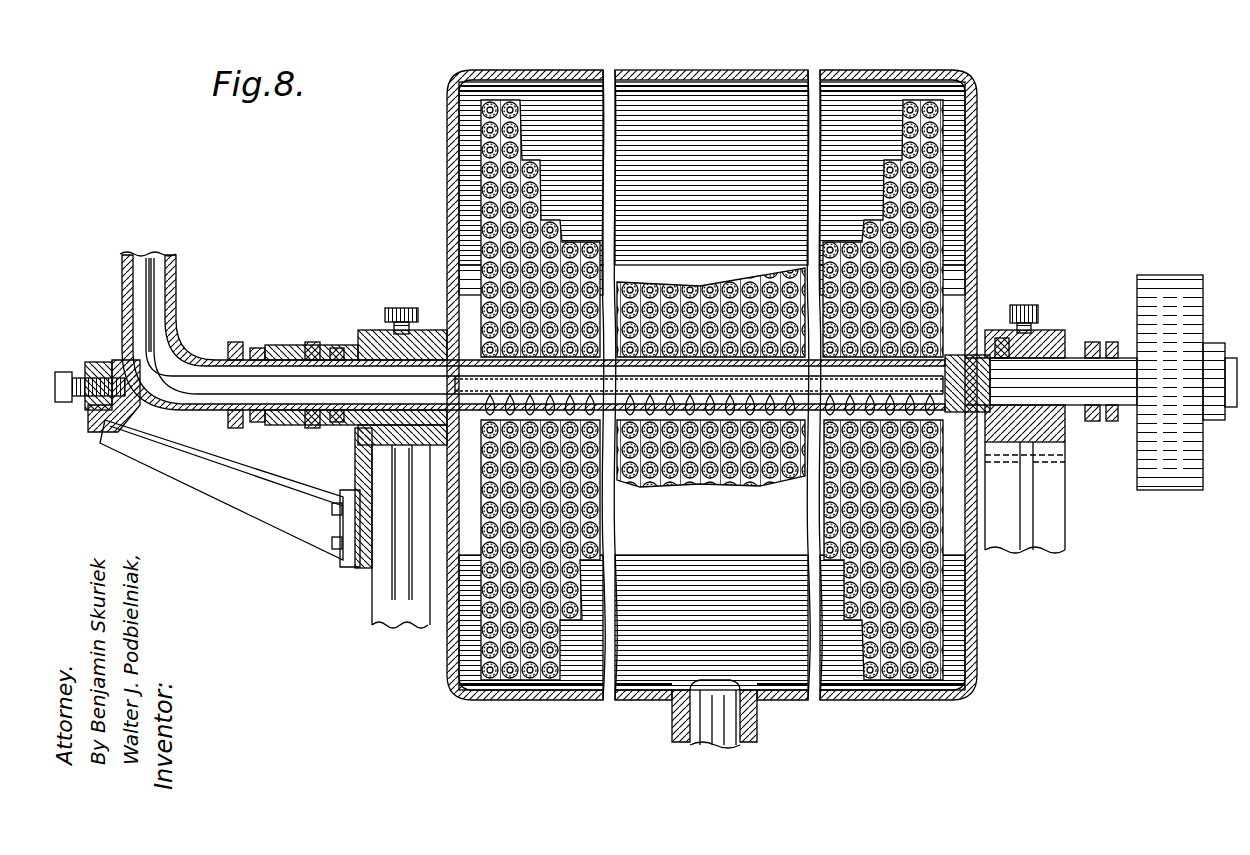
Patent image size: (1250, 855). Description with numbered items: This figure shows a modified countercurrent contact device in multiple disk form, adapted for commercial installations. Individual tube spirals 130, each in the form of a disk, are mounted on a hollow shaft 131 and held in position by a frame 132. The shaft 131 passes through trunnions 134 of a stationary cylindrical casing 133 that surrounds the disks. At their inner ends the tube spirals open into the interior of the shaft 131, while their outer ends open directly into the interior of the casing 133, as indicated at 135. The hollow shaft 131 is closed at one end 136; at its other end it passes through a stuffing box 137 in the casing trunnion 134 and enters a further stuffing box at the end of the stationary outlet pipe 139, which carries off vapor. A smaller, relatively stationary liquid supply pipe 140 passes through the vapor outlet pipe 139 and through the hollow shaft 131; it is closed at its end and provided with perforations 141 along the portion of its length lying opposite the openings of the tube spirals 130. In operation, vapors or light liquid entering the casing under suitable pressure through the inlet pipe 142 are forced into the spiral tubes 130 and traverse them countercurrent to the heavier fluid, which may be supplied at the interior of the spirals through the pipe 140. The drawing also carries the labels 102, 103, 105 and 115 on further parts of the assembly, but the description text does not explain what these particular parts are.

The drum lining 102 is at (486, 174).
The drive shaft 103 is at (1113, 382).
The section joint 105 is at (612, 700).
The support 115 is at (372, 605).
The tube spirals 130 is at (945, 165).
The hollow shaft 131 is at (297, 427).
The frame 132 is at (507, 100).
The stationary cylindrical casing 133 is at (712, 50).
The trunnions 134 is at (405, 330).
The outer end openings of tube spirals 135 is at (443, 512).
The closed end of hollow shaft 136 is at (240, 348).
The stuffing box 137 is at (338, 348).
The stationary outlet pipe 139 is at (122, 268).
The liquid supply pipe 140 is at (150, 308).
The perforations 141 is at (672, 378).
The inlet pipe 142 is at (757, 725).